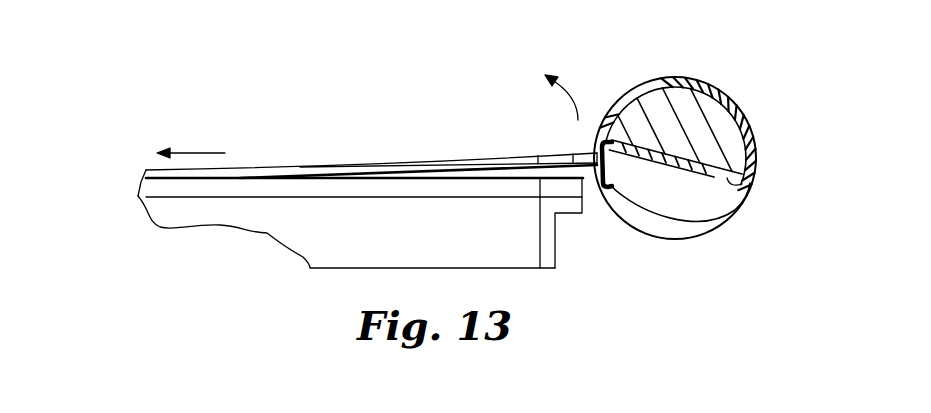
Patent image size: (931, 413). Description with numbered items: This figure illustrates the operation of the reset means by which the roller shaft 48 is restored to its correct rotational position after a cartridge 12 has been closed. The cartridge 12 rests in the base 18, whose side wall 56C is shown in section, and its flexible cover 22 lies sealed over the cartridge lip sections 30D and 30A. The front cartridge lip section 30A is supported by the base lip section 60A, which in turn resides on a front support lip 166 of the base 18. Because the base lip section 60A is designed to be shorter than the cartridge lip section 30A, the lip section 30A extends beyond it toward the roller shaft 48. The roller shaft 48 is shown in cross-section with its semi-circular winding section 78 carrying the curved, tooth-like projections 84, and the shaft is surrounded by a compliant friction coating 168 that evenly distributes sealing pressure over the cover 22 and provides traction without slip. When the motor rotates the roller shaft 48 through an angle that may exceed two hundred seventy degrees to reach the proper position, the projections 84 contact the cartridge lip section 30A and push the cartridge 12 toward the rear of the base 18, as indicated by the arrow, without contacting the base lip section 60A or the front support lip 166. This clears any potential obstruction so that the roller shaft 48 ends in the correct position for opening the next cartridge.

The cartridge 12 is at (289, 160).
The base 18 is at (127, 184).
The cover 22 is at (343, 166).
The lip section 30D is at (434, 167).
The lip section 30A is at (567, 152).
The roller shaft 48 is at (639, 68).
The compliant coating 168 is at (733, 101).
The winding section 78 is at (752, 184).
The projections 84 is at (673, 214).
The lip section 60A is at (587, 191).
The front support lip 166 is at (565, 215).
The side wall 56C is at (278, 227).